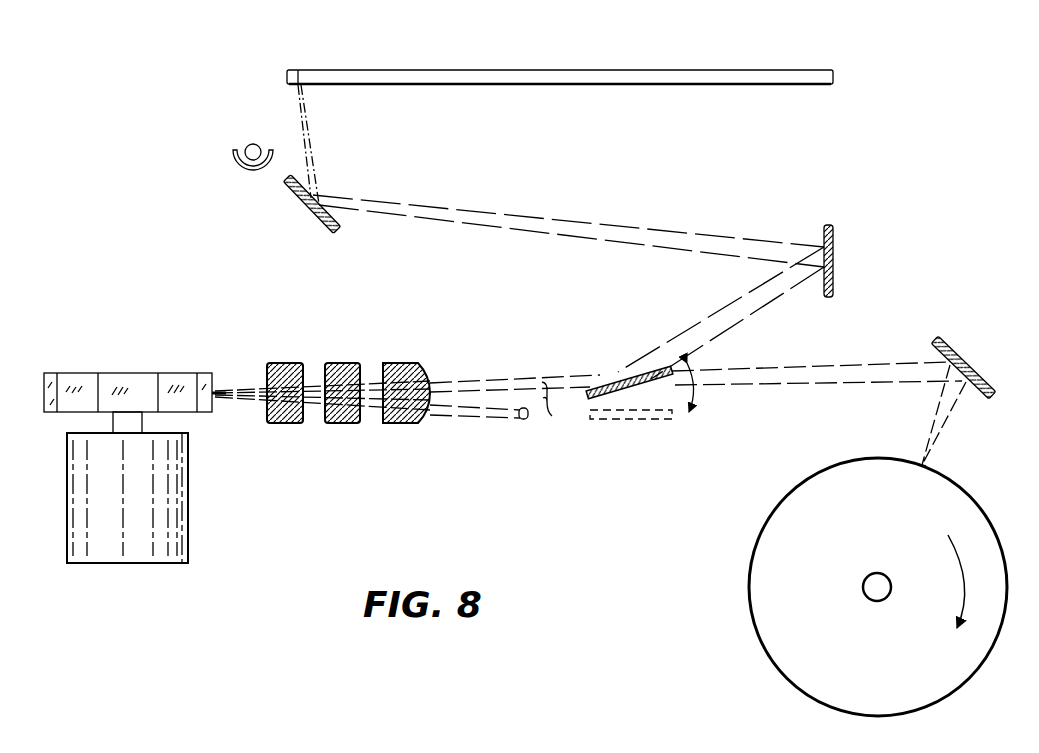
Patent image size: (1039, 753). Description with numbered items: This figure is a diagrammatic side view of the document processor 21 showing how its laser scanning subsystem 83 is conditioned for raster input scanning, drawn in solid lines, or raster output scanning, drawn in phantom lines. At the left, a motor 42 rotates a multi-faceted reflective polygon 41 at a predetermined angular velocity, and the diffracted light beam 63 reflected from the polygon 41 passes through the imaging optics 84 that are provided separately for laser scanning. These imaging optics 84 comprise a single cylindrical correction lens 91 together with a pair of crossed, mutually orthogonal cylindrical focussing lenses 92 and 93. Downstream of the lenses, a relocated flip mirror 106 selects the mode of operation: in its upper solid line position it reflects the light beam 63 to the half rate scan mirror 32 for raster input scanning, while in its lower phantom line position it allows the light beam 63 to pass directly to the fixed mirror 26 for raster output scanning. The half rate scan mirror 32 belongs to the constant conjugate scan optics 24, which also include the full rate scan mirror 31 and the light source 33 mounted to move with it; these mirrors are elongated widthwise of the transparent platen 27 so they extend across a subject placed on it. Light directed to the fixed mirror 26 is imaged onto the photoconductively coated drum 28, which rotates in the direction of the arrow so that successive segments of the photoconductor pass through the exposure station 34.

The multi-function document processor 21 is at (260, 82).
The transparent platen 27 is at (590, 80).
The light source 33 is at (235, 168).
The full rate scan mirror 31 is at (302, 200).
The half rate scan mirror 32 is at (836, 233).
The constant conjugate scan optics 24 is at (855, 250).
The fixed mirror 26 is at (965, 357).
The exposure station 34 is at (924, 465).
The photoconductively coated drum 28 is at (777, 517).
The flip mirror 106 is at (622, 372).
The diffracted light beam 63 is at (529, 413).
The cylindrical focussing lens 93 is at (281, 363).
The cylindrical focussing lens 92 is at (343, 363).
The cylindrical correction lens 91 is at (401, 363).
The imaging optics 84 is at (384, 450).
The laser scanning subsystem 83 is at (206, 318).
The multi-faceted reflective polygon 41 is at (120, 383).
The motor 42 is at (178, 478).